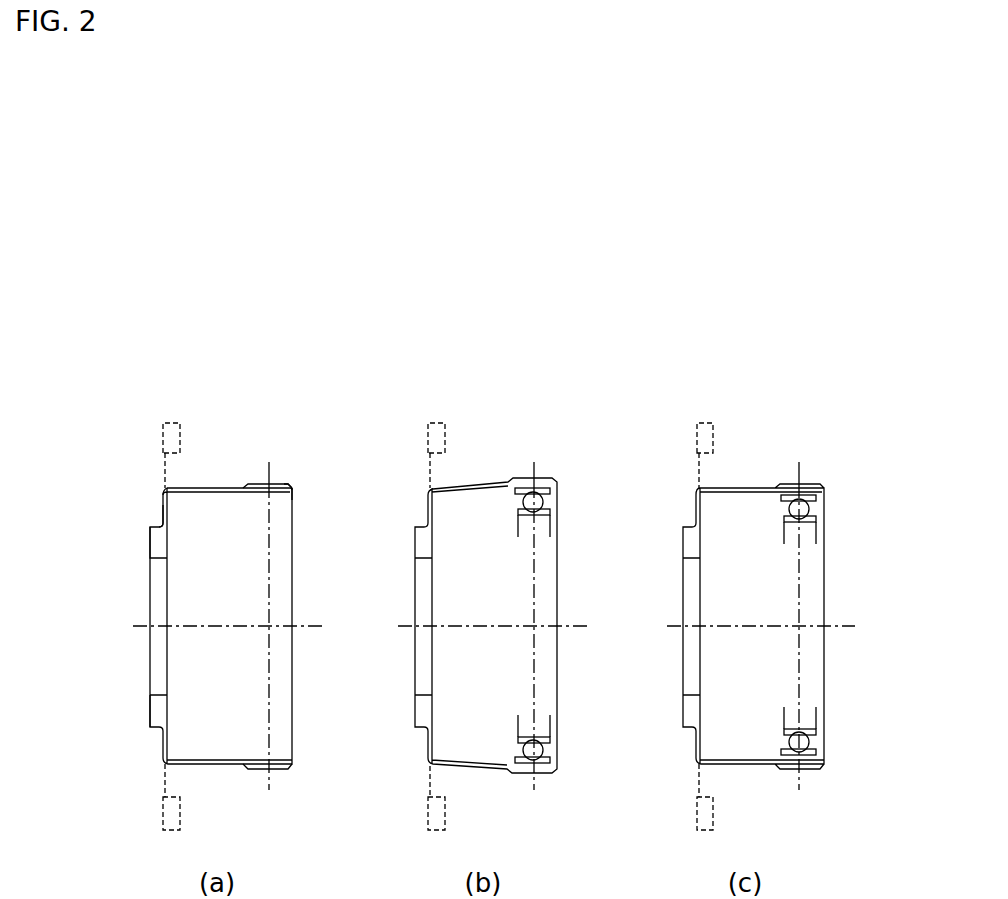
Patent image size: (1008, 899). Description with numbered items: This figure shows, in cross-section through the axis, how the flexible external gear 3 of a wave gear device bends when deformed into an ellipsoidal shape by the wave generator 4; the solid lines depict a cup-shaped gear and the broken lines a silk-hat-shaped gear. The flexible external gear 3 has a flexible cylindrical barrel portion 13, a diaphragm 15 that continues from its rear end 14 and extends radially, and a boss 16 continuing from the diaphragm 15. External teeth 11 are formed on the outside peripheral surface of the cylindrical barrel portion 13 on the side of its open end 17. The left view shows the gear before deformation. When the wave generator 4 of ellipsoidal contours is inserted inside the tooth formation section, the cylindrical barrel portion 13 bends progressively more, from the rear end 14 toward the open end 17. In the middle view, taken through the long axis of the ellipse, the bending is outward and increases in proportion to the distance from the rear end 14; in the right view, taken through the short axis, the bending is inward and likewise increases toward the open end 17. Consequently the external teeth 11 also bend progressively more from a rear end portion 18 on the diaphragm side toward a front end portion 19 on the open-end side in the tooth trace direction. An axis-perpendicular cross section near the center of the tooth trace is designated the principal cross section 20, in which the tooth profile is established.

The flexible external gear 3 is at (448, 540).
The wave generator 4 is at (543, 519).
The external teeth 11 is at (280, 484).
The cylindrical barrel portion 13 is at (207, 495).
The rear end 14 is at (165, 500).
The diaphragm 15 is at (164, 512).
The boss 16 is at (157, 542).
The open end 17 is at (296, 490).
The rear end portion 18 is at (245, 484).
The front end portion 19 is at (290, 484).
The principal cross section 20 is at (270, 565).